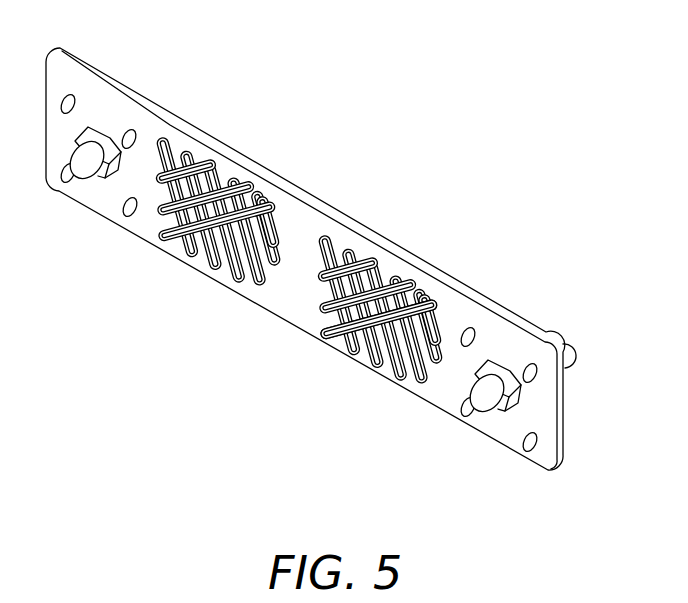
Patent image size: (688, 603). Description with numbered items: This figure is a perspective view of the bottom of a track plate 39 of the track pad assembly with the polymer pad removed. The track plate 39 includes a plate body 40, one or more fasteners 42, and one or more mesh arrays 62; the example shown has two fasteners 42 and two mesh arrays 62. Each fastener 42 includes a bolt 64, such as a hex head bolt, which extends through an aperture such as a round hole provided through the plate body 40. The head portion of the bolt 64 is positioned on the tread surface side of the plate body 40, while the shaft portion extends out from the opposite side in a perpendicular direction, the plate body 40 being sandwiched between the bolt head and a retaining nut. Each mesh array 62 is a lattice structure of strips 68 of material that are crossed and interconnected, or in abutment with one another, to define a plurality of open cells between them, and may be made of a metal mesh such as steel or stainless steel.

The track plate 39 is at (329, 245).
The plate body 40 is at (301, 237).
The fasteners 42 is at (93, 101).
The mesh arrays 62 is at (311, 267).
The bolt 64 is at (571, 344).
The strips 68 is at (349, 338).